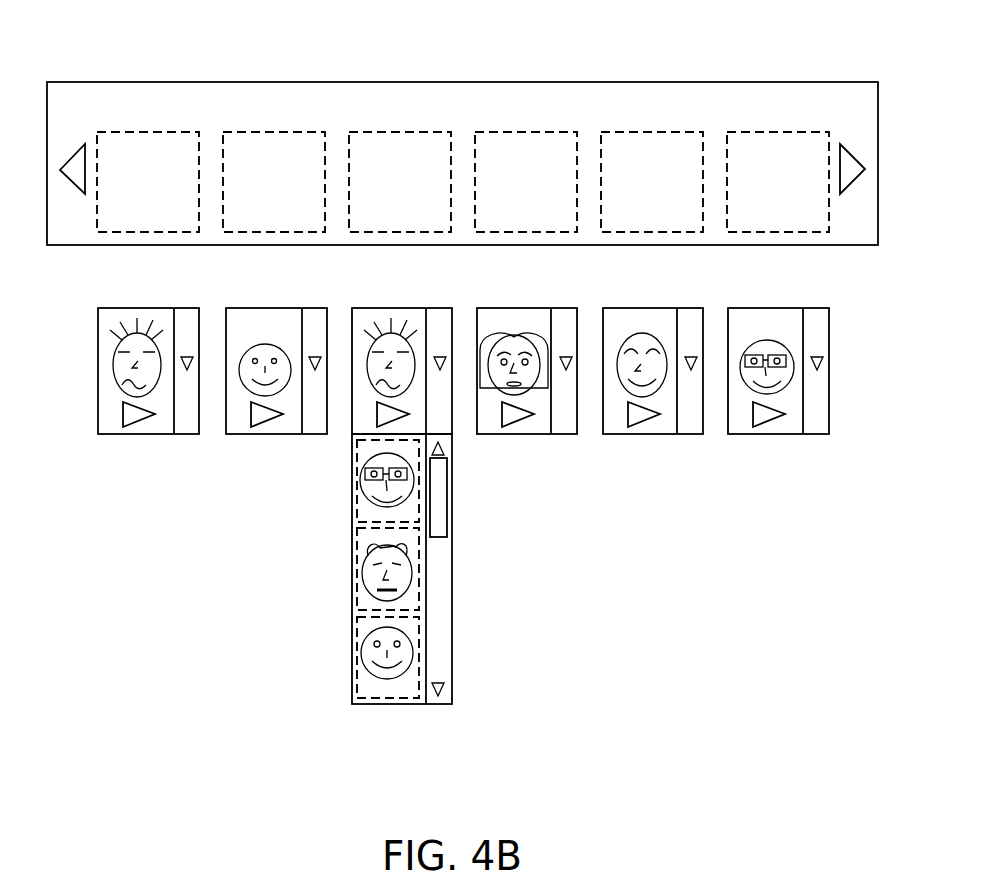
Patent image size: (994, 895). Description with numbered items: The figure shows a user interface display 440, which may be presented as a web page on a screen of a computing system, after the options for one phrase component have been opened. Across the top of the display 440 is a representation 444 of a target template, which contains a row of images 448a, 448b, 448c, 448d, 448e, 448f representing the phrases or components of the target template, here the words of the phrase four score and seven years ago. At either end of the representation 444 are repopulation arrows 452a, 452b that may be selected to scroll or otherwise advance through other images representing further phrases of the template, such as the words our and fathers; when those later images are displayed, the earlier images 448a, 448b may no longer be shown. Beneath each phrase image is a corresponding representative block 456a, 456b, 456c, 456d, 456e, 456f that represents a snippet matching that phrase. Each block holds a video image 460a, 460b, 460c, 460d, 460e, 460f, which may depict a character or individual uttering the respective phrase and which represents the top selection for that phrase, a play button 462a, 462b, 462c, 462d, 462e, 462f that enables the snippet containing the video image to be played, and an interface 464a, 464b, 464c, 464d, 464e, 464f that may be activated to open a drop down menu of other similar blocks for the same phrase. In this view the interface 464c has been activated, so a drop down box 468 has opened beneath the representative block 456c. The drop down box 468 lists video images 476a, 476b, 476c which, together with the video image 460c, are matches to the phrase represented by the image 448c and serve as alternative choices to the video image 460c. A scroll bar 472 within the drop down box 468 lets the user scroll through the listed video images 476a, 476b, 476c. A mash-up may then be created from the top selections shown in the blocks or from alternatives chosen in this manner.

The display 440 is at (98, 32).
The representation of a target template 444 is at (820, 82).
The image 448a is at (160, 232).
The image 448b is at (286, 232).
The image 448c is at (412, 232).
The image 448d is at (538, 232).
The image 448e is at (664, 232).
The image 448f is at (790, 232).
The repopulation arrow 452a is at (72, 183).
The repopulation arrow 452b is at (845, 162).
The representative block 456a is at (137, 308).
The representative block 456b is at (265, 308).
The representative block 456c is at (390, 308).
The representative block 456d is at (549, 308).
The representative block 456e is at (642, 308).
The representative block 456f is at (767, 308).
The video image 460a is at (118, 395).
The video image 460b is at (246, 395).
The video image 460c is at (368, 393).
The video image 460d is at (494, 395).
The video image 460e is at (621, 395).
The video image 460f is at (747, 395).
The play button 462a is at (124, 427).
The play button 462b is at (252, 427).
The play button 462c is at (403, 411).
The play button 462d is at (503, 427).
The play button 462e is at (628, 427).
The play button 462f is at (754, 427).
The interface 464a is at (187, 372).
The interface 464b is at (315, 372).
The interface 464c is at (440, 354).
The interface 464d is at (566, 372).
The interface 464e is at (691, 372).
The interface 464f is at (817, 372).
The drop down box 468 is at (400, 704).
The scroll bar 472 is at (448, 520).
The video image 476a is at (358, 500).
The video image 476b is at (358, 561).
The video image 476c is at (358, 654).